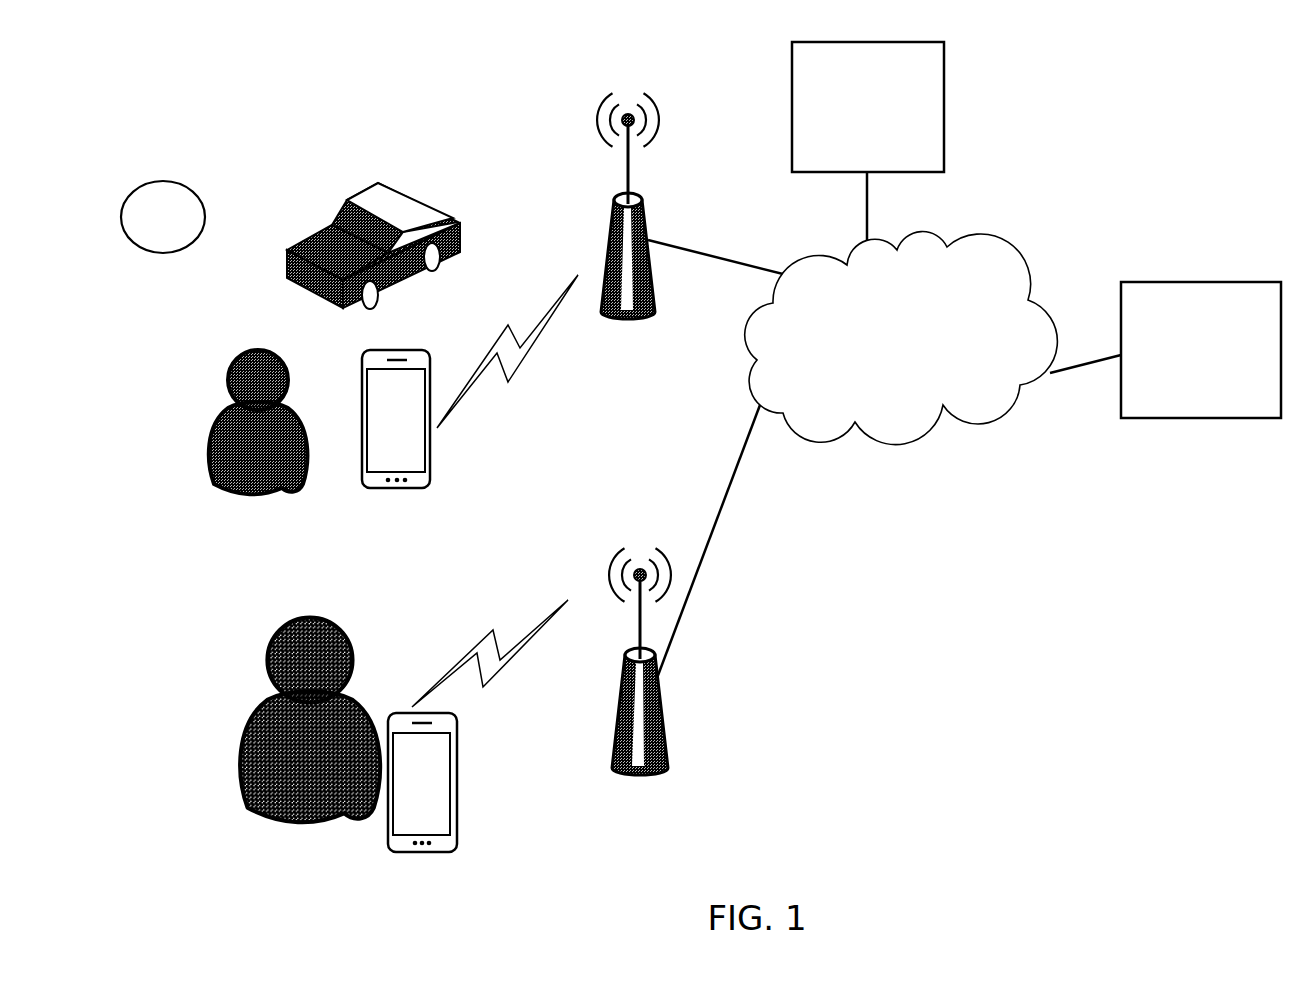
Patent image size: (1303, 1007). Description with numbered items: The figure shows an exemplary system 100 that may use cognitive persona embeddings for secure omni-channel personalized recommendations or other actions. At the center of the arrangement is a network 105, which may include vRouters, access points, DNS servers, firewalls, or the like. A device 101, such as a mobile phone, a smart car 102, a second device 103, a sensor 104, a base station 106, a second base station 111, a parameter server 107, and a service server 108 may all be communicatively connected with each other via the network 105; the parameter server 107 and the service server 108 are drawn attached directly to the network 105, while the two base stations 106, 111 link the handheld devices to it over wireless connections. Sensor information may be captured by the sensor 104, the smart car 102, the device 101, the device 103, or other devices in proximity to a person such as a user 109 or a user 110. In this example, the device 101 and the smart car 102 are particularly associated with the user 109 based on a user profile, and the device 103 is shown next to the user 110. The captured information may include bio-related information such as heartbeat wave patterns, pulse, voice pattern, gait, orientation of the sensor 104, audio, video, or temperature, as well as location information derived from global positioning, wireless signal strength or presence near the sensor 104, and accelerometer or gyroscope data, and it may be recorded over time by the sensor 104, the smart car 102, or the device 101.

The system 100 is at (330, 106).
The device 101 is at (396, 435).
The smart car 102 is at (438, 267).
The device 103 is at (422, 798).
The sensor 104 is at (163, 217).
The network 105 is at (876, 354).
The base station 106 is at (643, 206).
The parameter server 107 is at (850, 132).
The service server 108 is at (1184, 375).
The user 109 is at (210, 478).
The user 110 is at (237, 733).
The base station 111 is at (630, 776).